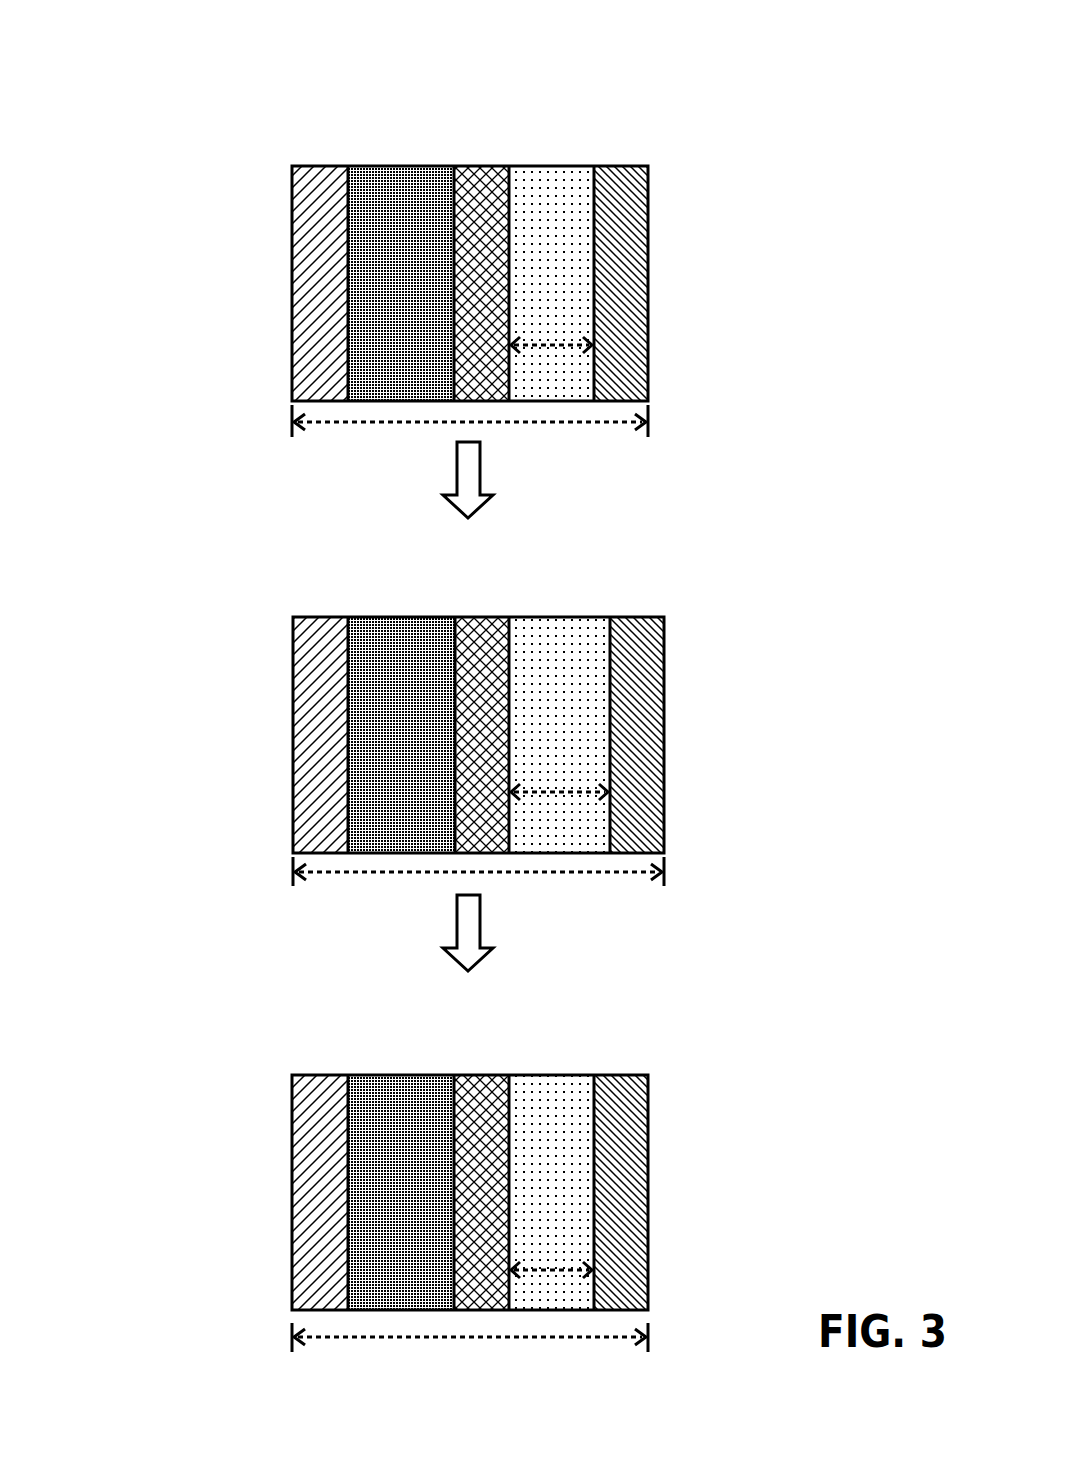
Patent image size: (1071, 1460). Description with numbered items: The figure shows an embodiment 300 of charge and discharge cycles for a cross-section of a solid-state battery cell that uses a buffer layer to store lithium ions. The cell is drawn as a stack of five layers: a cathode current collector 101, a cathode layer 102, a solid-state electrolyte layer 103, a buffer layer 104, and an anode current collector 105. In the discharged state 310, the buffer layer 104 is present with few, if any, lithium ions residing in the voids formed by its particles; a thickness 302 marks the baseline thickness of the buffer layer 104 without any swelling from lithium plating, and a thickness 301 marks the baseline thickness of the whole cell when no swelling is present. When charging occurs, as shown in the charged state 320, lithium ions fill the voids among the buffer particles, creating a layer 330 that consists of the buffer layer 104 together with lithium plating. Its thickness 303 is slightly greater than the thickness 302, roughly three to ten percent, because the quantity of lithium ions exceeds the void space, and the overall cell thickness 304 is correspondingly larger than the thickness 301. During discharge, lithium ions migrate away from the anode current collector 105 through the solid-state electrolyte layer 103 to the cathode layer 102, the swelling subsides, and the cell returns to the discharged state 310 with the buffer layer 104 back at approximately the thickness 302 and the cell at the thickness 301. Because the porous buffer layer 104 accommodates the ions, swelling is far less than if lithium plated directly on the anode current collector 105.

The embodiment of charge and discharge cycles 300 is at (58, 93).
The discharged state 310 is at (228, 117).
The charged state 320 is at (228, 566).
The cathode current collector 101 is at (322, 166).
The cathode layer 102 is at (405, 166).
The solid-state electrolyte layer 103 is at (482, 166).
The buffer layer 104 is at (553, 166).
The layer including buffer layer and lithium plating 330 is at (552, 617).
The anode current collector 105 is at (620, 166).
The baseline thickness of battery cell 301 is at (343, 423).
The baseline thickness of buffer layer 302 is at (562, 342).
The thickness of charged layer 303 is at (571, 790).
The thickness of battery cell in charged state 304 is at (352, 873).